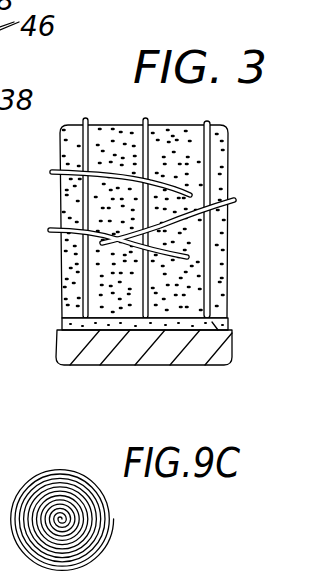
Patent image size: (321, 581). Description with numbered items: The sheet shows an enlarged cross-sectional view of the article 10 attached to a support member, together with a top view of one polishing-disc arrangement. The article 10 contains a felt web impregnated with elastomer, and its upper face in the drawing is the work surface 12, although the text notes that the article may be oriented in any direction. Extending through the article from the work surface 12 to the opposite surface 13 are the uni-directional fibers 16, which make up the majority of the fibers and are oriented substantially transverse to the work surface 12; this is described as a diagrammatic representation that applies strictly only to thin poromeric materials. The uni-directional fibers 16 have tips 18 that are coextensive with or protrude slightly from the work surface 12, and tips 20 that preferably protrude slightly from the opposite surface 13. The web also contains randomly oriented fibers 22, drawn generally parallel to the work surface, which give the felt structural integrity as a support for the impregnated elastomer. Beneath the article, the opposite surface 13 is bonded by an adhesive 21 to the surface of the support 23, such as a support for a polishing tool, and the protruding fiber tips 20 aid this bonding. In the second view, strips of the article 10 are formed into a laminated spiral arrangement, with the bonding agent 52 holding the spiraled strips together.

In FIG. 3, the article 10 is at (62, 186).
In FIG. 9C, the article 10 is at (92, 510).
In FIG. 3, the work surface 12 is at (176, 126).
In FIG. 3, the opposite surface 13 is at (150, 336).
In FIG. 3, the uni-directional fibers 16 is at (84, 277).
In FIG. 3, the tips 18 is at (143, 118).
In FIG. 3, the tips 20 is at (62, 322).
In FIG. 3, the adhesive 21 is at (84, 359).
In FIG. 3, the randomly oriented fibers 22 is at (62, 244).
In FIG. 3, the support 23 is at (95, 363).
In FIG. 9C, the bonding agent 52 is at (62, 502).